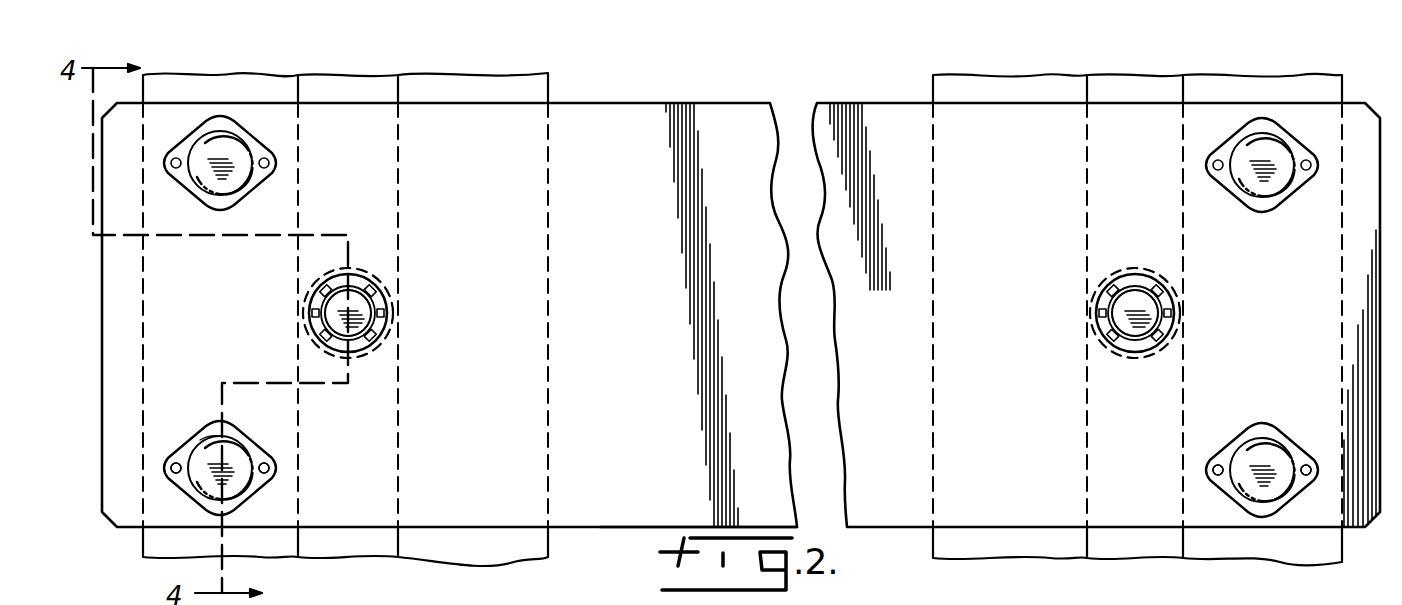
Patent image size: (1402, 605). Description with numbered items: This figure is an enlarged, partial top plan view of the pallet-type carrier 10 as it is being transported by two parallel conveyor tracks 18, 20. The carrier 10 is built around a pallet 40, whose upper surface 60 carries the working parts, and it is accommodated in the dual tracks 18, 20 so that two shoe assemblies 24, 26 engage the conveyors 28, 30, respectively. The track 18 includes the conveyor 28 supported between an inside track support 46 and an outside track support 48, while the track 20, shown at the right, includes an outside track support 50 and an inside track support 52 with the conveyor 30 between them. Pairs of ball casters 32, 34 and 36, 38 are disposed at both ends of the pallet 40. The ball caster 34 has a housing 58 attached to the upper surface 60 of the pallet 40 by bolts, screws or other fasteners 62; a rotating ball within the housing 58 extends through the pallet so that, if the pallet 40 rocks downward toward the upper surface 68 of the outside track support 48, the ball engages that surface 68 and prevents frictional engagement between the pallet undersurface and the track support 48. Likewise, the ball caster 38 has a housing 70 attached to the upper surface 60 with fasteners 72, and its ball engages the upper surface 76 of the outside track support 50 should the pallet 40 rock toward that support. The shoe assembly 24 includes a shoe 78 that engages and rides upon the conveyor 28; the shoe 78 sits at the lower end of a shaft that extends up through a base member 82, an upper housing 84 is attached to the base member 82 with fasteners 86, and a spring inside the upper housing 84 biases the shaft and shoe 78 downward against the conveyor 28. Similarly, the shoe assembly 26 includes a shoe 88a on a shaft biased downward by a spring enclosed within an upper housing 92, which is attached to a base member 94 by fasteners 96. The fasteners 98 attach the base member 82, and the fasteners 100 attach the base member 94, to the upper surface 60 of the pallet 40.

The carrier 10 is at (741, 89).
The track 18 is at (554, 90).
The track 20 is at (926, 93).
The shoe assembly 24 is at (400, 294).
The shoe assembly 26 is at (1180, 282).
The conveyor 28 is at (368, 558).
The conveyor 30 is at (1145, 560).
The ball caster 32 is at (209, 206).
The ball caster 34 is at (243, 442).
The ball caster 36 is at (1259, 216).
The ball caster 38 is at (1252, 424).
The pallet 40 is at (658, 520).
The inside track support 46 is at (473, 78).
The outside track support 48 is at (236, 80).
The outside track support 50 is at (1262, 78).
The inside track support 52 is at (1033, 82).
The housing 58 is at (208, 445).
The upper surface 60 is at (656, 82).
The fasteners 62 is at (266, 476).
The upper surface 68 is at (170, 558).
The housing 70 is at (1270, 442).
The fasteners 72 is at (1216, 478).
The upper surface 76 is at (1295, 562).
The shoe 78 is at (382, 355).
The base member 82 is at (386, 336).
The upper housing 84 is at (334, 314).
The fasteners 86 is at (326, 347).
The shoe 88a is at (1093, 352).
The upper housing 92 is at (1118, 306).
The base member 94 is at (1172, 306).
The fasteners 96 is at (1150, 348).
The fasteners 98 is at (368, 350).
The fasteners 100 is at (1120, 350).